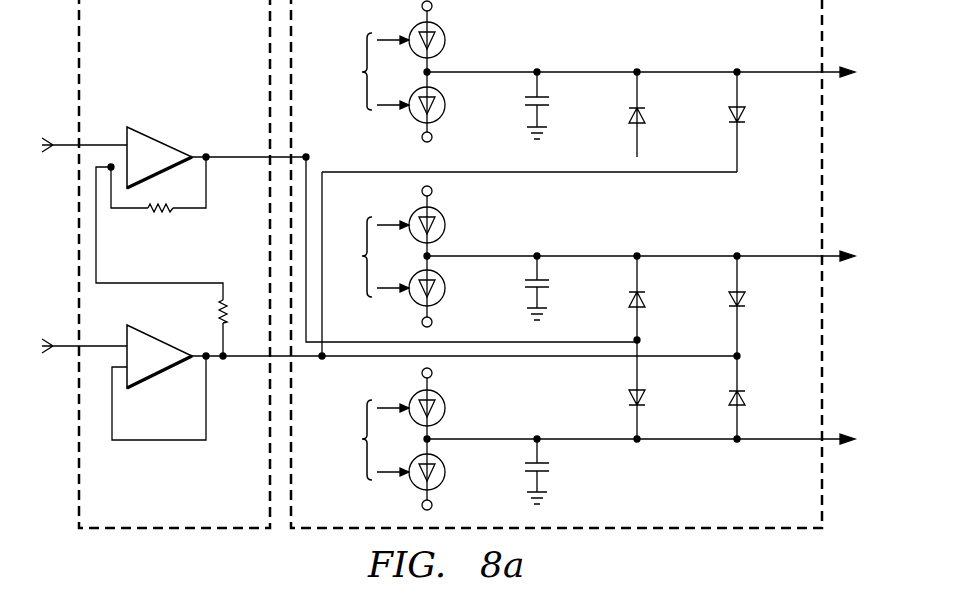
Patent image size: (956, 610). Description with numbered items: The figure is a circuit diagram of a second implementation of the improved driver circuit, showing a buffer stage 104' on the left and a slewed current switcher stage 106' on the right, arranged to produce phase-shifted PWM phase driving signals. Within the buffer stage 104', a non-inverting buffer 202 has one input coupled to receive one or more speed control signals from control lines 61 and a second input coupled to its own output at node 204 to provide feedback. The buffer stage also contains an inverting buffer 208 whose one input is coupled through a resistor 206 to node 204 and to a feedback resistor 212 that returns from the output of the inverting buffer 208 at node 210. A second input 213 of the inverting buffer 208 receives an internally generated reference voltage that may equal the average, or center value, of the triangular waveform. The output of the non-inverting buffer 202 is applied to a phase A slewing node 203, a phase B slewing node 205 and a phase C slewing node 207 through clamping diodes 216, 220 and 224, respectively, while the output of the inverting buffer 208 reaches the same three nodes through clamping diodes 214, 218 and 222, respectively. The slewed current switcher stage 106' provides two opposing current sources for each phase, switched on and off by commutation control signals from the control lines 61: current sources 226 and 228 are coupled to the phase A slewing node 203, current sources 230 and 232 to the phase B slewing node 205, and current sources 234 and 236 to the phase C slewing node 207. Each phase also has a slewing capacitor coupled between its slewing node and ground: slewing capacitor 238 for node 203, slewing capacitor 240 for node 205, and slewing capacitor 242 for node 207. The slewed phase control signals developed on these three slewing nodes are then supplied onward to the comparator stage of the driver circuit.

The control lines 61 is at (63, 347).
The buffer stage 104' is at (180, 29).
The slewed current switcher stage 106' is at (773, 29).
The non-inverting buffer 202 is at (160, 375).
The phase A slewing node 203 is at (583, 72).
The node 204 is at (248, 358).
The phase B slewing node 205 is at (668, 255).
The resistor 206 is at (218, 320).
The phase C slewing node 207 is at (670, 442).
The inverting buffer 208 is at (160, 137).
The node 210 is at (222, 160).
The feedback resistor 212 is at (157, 213).
The second input 213 is at (63, 145).
The clamping diode 214 is at (648, 115).
The clamping diode 216 is at (748, 112).
The clamping diode 218 is at (648, 299).
The clamping diode 220 is at (748, 297).
The clamping diode 222 is at (648, 395).
The clamping diode 224 is at (748, 398).
The current source 226 is at (445, 38).
The current source 228 is at (445, 108).
The current source 230 is at (445, 223).
The current source 232 is at (445, 291).
The current source 234 is at (445, 406).
The current source 236 is at (445, 475).
The slewing capacitor 238 is at (548, 100).
The slewing capacitor 240 is at (548, 283).
The slewing capacitor 242 is at (548, 466).